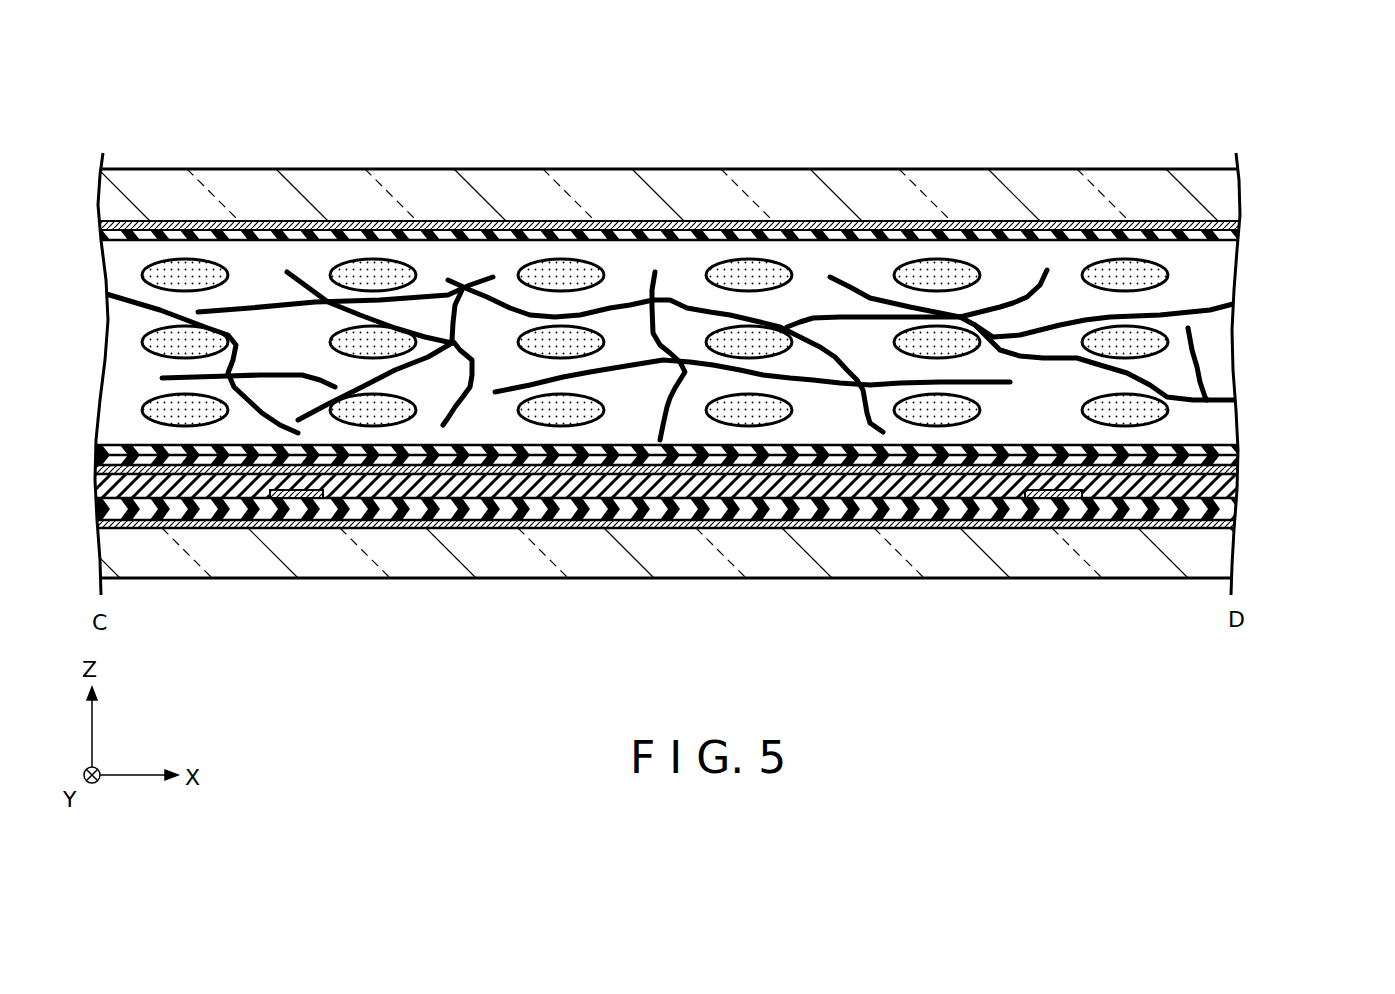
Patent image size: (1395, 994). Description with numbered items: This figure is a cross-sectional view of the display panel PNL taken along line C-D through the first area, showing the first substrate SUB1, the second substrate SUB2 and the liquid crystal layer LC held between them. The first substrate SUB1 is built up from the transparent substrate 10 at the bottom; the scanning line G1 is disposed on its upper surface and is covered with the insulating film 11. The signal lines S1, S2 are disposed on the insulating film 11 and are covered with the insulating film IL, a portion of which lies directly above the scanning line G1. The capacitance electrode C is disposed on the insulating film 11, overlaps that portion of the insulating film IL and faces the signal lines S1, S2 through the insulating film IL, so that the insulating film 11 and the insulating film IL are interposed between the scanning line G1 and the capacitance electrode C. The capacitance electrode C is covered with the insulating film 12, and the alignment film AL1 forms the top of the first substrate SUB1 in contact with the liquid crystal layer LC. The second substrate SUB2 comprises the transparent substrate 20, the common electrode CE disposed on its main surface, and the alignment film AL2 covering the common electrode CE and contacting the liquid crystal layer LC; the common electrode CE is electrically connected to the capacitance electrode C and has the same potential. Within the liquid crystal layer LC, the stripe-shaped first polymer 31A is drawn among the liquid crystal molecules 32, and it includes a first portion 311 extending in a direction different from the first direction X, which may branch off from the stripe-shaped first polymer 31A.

The transparent substrate 20 is at (155, 185).
The display panel PNL is at (1196, 155).
The second substrate SUB2 is at (732, 199).
The common electrode CE is at (1233, 226).
The alignment film AL2 is at (1210, 240).
The liquid crystal layer LC is at (706, 349).
The first polymer 31A is at (987, 382).
The first portion 311 is at (657, 428).
The liquid crystal molecules 32 is at (968, 412).
The alignment film AL1 is at (1200, 446).
The insulating film 12 is at (1217, 460).
The capacitance electrode C is at (1233, 469).
The insulating film 11 is at (1226, 510).
The scanning line G1 is at (1235, 523).
The first substrate SUB1 is at (722, 520).
The transparent substrate 10 is at (150, 570).
The signal line S1 is at (289, 498).
The signal line S2 is at (1063, 498).